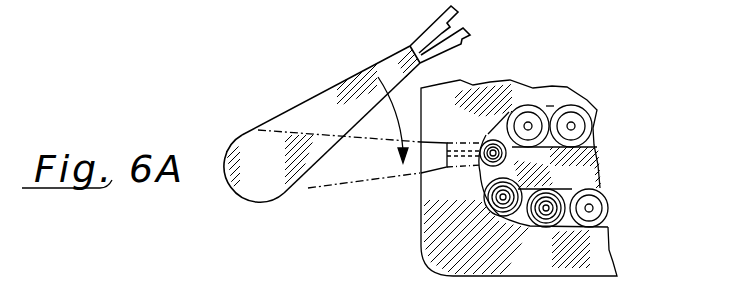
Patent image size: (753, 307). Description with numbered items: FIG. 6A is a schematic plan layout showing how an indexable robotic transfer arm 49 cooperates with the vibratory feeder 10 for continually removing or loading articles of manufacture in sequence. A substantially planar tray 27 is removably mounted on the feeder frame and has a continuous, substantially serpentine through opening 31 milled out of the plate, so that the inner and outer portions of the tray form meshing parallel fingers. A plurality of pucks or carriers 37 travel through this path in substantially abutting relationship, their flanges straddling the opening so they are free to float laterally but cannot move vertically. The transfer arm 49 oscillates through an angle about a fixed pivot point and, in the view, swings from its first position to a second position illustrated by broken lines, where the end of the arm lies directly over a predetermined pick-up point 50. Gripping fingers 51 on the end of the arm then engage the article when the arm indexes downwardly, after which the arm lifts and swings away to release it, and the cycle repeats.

The vibratory feeder 10 is at (620, 233).
The tray 27 is at (546, 260).
The through opening 31 is at (563, 117).
The carriers 37 is at (584, 98).
The robotic transfer arm 49 is at (283, 115).
The pick-up point 50 is at (489, 140).
The gripping fingers 51 is at (426, 28).